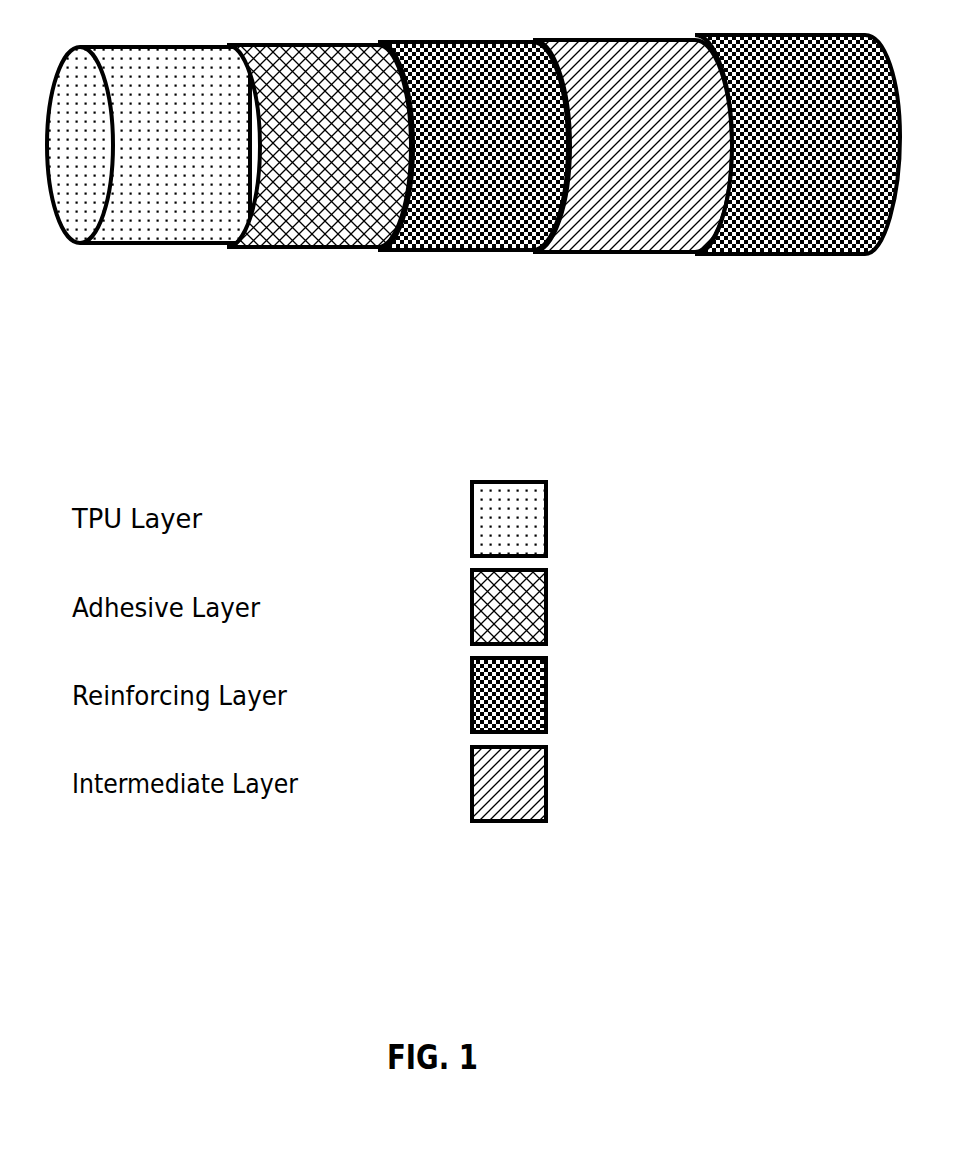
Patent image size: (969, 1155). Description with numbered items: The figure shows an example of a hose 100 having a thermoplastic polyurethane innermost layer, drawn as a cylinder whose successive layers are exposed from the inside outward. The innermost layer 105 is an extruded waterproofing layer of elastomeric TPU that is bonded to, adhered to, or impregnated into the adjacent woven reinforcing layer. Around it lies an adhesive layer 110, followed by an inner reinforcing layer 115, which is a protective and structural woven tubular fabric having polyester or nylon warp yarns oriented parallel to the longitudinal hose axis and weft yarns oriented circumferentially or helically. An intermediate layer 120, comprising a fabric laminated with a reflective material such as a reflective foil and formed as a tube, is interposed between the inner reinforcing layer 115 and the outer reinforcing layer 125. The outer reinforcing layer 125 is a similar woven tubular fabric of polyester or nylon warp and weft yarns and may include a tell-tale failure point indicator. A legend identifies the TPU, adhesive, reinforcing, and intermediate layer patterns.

The hose 100 is at (473, 524).
The innermost layer 105 is at (157, 245).
The adhesive layer 110 is at (315, 247).
The inner reinforcing layer 115 is at (457, 250).
The intermediate layer 120 is at (633, 257).
The outer reinforcing layer 125 is at (792, 258).